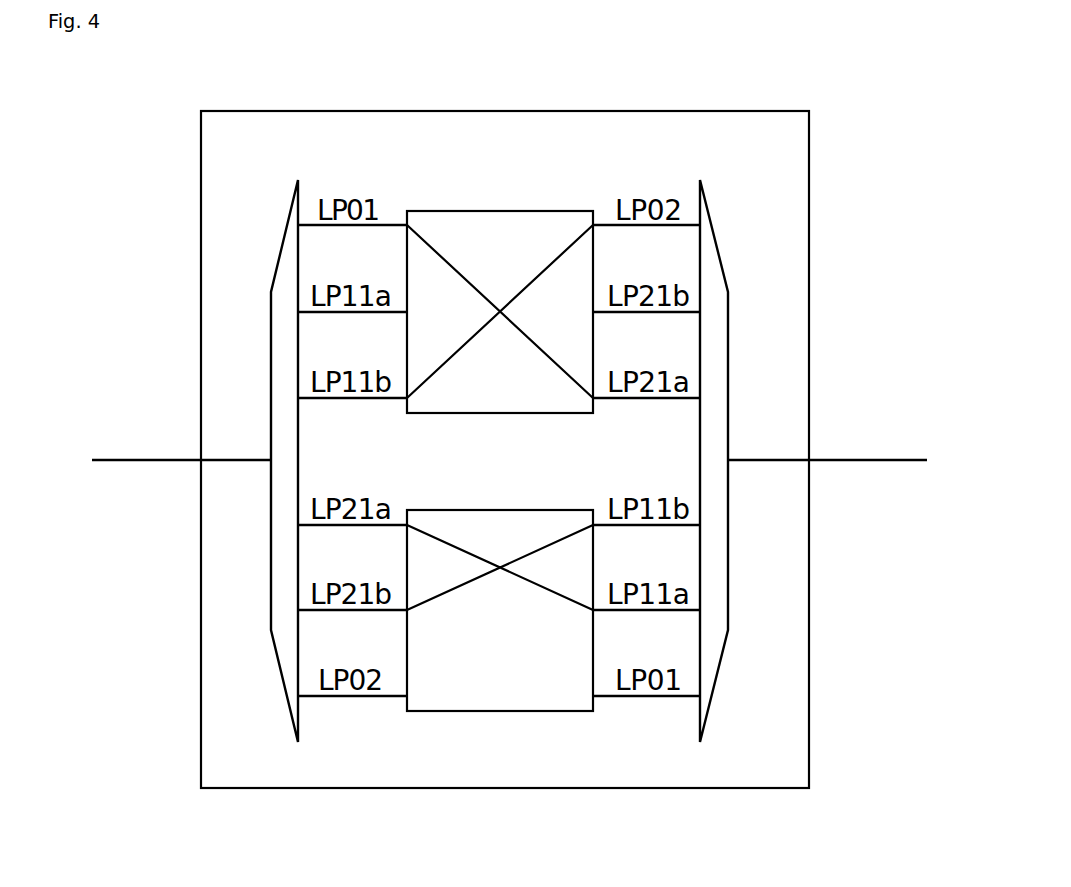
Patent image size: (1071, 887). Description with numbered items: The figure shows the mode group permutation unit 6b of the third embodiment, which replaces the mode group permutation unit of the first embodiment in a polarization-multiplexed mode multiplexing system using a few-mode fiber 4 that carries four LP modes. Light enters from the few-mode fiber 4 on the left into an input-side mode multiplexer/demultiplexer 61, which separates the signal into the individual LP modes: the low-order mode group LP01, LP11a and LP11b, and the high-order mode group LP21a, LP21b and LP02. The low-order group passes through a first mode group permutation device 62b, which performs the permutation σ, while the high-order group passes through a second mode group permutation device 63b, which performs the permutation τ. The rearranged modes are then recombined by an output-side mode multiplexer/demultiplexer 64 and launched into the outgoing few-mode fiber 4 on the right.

The mode group permutation unit 6b is at (740, 111).
The input-side mode multiplexer/demultiplexer 61 is at (281, 239).
The output-side mode multiplexer/demultiplexer 64 is at (720, 252).
The first mode group permutation device 62b is at (472, 211).
The second mode group permutation device 63b is at (472, 510).
The few-mode fiber 4 is at (135, 460).